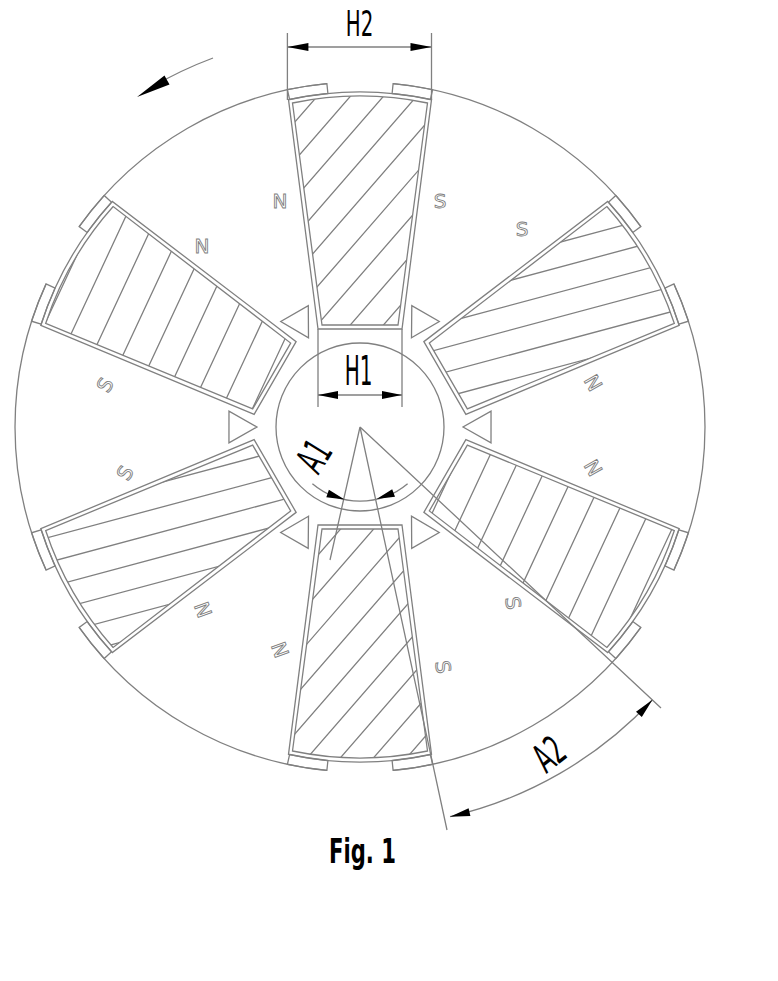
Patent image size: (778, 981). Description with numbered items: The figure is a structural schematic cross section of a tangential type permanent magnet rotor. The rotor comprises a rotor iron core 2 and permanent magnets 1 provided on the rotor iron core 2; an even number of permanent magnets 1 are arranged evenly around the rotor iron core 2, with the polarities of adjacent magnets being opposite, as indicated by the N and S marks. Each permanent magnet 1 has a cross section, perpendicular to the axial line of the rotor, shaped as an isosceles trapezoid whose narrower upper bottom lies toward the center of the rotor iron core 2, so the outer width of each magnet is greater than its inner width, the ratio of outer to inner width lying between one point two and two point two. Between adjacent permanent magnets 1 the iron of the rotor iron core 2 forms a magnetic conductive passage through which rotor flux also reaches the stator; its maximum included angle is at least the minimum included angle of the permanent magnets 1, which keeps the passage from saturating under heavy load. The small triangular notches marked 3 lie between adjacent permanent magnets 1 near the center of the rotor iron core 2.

The permanent magnet 1 is at (377, 203).
The rotor iron core 2 is at (530, 175).
The flux barrier notch 3 is at (300, 320).